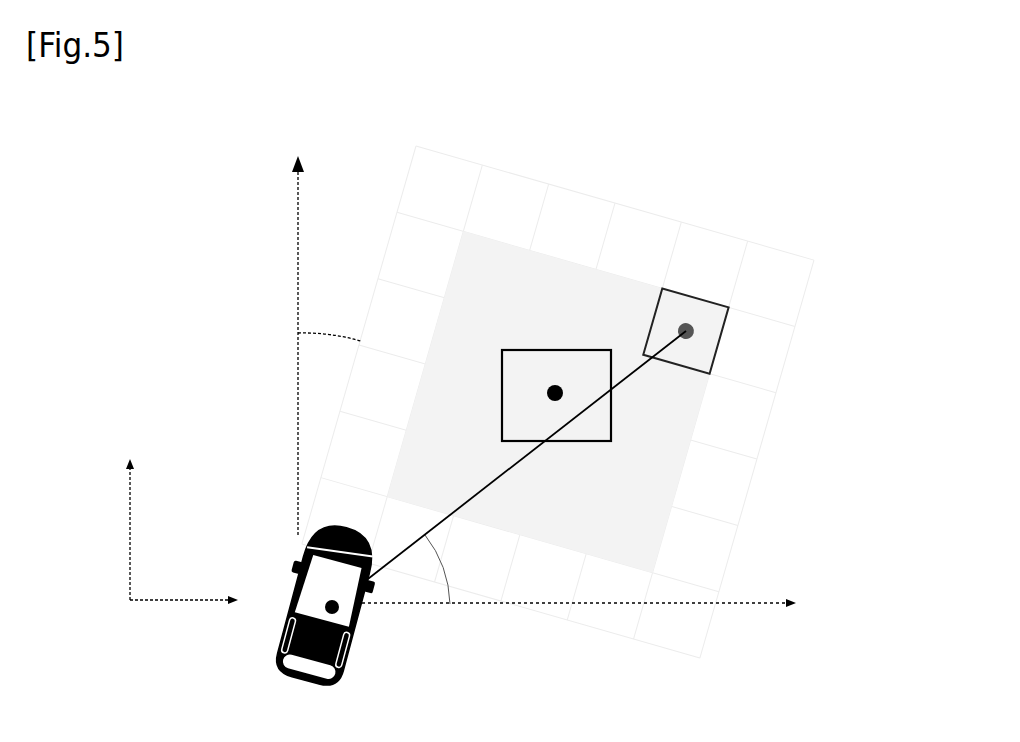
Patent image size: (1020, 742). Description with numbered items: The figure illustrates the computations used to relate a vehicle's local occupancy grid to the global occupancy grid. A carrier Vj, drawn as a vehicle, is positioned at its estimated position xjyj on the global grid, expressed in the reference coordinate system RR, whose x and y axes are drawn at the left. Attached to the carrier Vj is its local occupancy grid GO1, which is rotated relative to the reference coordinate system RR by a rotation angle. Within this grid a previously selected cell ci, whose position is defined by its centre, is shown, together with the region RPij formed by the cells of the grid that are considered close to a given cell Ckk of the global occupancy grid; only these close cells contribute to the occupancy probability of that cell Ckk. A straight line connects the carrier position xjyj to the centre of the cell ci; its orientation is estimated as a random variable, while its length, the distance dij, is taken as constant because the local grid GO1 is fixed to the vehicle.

The reference coordinate system RR is at (133, 515).
The carrier Vj is at (348, 673).
The local occupancy grid GO1 is at (765, 438).
The region of the occupancy grid RPij is at (562, 537).
The cell of the global occupancy grid Ckk is at (563, 350).
The cell of the local grid ci is at (727, 335).
The distance between the carrier and the cell dij is at (509, 469).
The position of the carrier xjyj is at (370, 624).